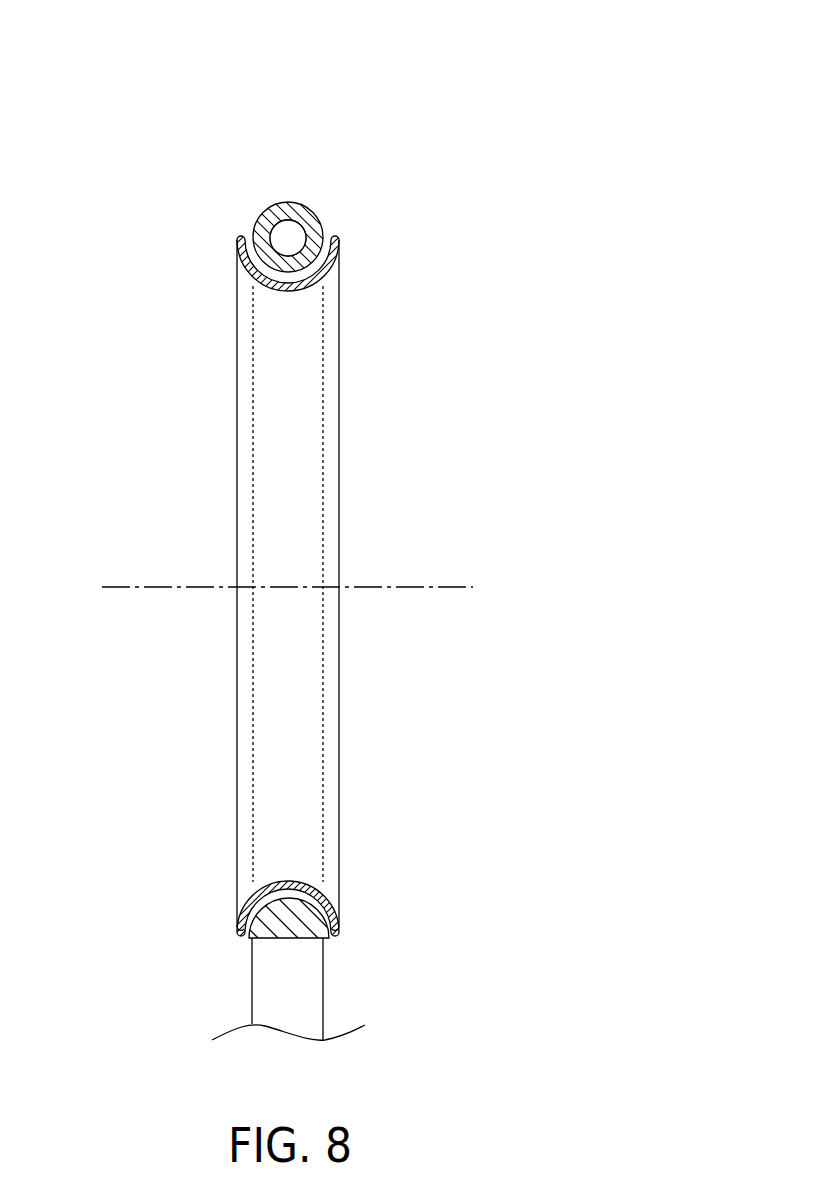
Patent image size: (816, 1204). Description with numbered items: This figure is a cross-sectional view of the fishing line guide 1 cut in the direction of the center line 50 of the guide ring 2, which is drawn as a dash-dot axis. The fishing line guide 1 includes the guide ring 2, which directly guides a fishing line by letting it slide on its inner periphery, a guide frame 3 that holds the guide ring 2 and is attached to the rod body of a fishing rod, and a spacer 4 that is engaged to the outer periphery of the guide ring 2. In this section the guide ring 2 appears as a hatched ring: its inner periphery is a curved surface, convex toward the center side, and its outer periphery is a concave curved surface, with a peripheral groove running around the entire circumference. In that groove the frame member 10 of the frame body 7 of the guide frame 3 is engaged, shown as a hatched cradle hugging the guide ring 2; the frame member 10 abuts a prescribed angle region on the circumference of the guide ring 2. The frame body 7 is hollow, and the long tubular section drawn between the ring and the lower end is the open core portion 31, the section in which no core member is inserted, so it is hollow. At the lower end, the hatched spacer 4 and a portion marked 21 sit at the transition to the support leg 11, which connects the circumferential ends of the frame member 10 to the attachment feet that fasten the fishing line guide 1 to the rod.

The fishing line guide 1 is at (372, 545).
The guide ring 2 is at (339, 490).
The guide frame 3 is at (287, 202).
The frame member 10 is at (312, 156).
The frame body 7 is at (255, 156).
The open core portion 31 is at (318, 212).
The center line of the guide ring 50 is at (118, 587).
The end cap portion 21 is at (323, 972).
The spacer 4 is at (288, 940).
The support leg 11 is at (252, 1000).